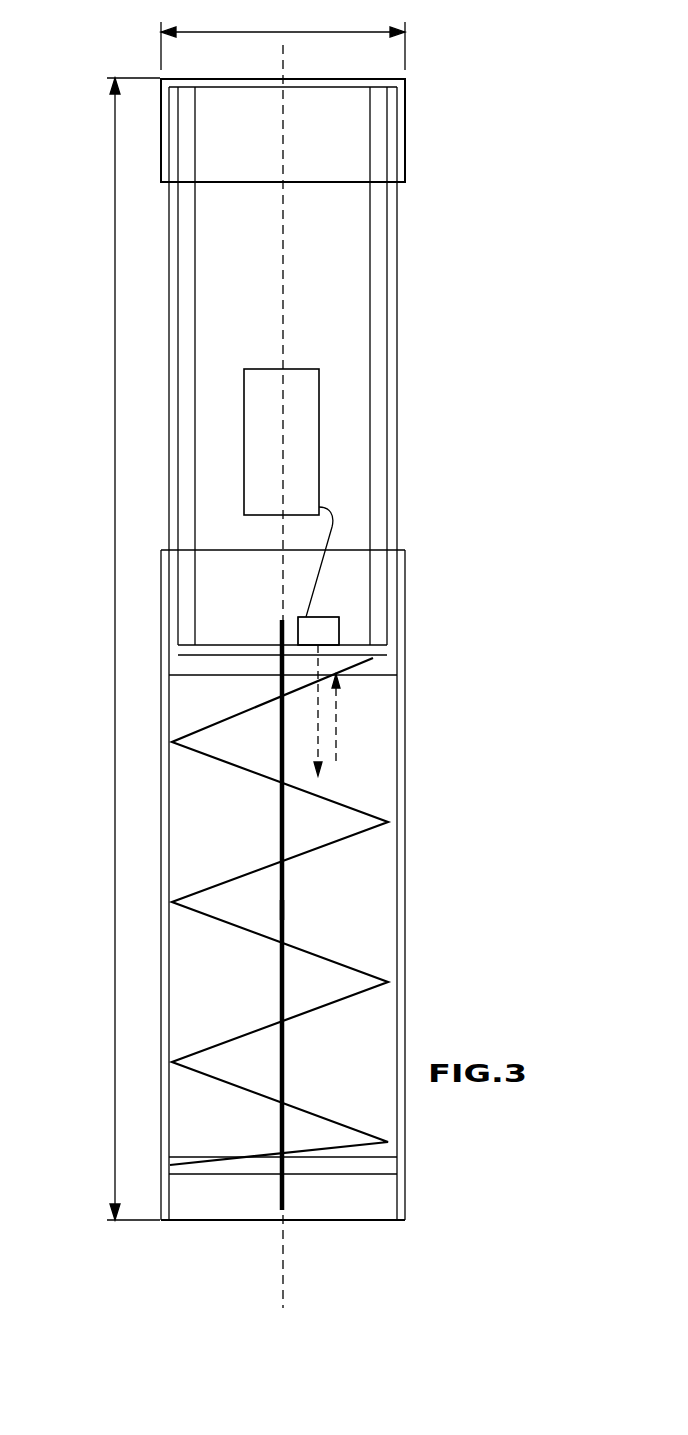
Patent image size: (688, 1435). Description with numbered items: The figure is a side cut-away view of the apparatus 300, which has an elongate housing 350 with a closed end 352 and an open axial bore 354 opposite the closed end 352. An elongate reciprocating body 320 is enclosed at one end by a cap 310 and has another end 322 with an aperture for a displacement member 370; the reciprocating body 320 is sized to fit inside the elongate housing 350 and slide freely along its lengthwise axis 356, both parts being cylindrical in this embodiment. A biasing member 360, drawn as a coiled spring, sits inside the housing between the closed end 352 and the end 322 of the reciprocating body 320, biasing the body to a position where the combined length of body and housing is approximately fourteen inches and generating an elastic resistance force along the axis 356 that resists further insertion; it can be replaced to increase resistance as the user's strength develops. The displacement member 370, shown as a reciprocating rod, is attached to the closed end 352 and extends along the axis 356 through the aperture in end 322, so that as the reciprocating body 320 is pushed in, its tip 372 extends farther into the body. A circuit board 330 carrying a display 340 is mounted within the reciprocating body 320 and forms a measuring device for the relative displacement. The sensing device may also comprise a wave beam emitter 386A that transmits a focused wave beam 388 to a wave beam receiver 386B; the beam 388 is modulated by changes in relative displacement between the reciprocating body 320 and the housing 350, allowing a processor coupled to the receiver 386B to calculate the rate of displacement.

The apparatus 300 is at (57, 185).
The cap 310 is at (405, 140).
The elongate reciprocating body 320 is at (397, 362).
The end of reciprocating body 322 is at (347, 660).
The circuit board 330 is at (323, 253).
The display 340 is at (303, 381).
The elongate housing 350 is at (397, 775).
The closed end 352 is at (330, 1222).
The open axial bore 354 is at (161, 550).
The lengthwise axis 356 is at (283, 1273).
The biasing member 360 is at (350, 838).
The displacement member 370 is at (282, 910).
The tip 372 is at (280, 619).
The wave beam emitter 386A is at (335, 617).
The wave beam receiver 386B is at (436, 616).
The focused wave beam 388 is at (335, 712).